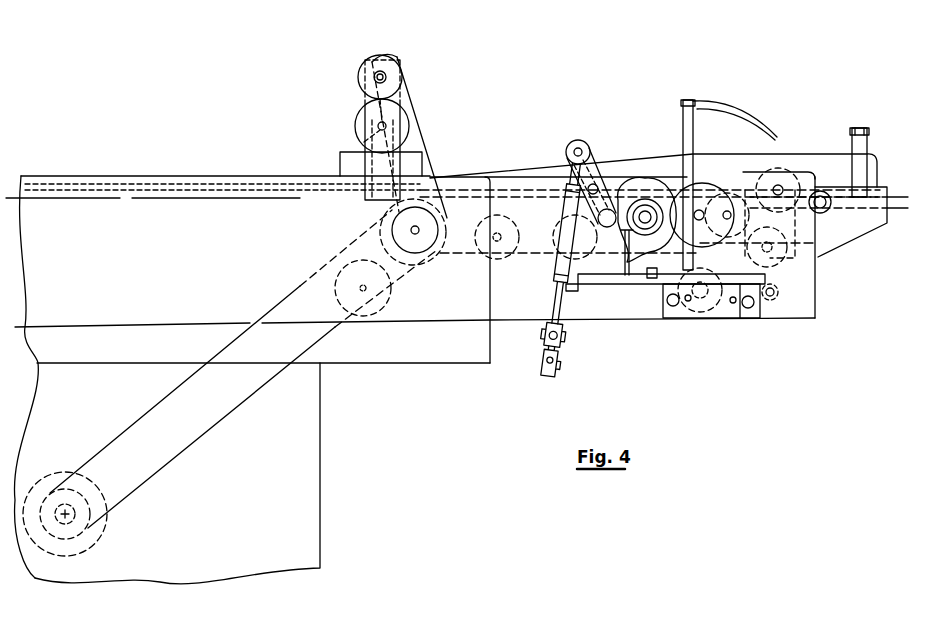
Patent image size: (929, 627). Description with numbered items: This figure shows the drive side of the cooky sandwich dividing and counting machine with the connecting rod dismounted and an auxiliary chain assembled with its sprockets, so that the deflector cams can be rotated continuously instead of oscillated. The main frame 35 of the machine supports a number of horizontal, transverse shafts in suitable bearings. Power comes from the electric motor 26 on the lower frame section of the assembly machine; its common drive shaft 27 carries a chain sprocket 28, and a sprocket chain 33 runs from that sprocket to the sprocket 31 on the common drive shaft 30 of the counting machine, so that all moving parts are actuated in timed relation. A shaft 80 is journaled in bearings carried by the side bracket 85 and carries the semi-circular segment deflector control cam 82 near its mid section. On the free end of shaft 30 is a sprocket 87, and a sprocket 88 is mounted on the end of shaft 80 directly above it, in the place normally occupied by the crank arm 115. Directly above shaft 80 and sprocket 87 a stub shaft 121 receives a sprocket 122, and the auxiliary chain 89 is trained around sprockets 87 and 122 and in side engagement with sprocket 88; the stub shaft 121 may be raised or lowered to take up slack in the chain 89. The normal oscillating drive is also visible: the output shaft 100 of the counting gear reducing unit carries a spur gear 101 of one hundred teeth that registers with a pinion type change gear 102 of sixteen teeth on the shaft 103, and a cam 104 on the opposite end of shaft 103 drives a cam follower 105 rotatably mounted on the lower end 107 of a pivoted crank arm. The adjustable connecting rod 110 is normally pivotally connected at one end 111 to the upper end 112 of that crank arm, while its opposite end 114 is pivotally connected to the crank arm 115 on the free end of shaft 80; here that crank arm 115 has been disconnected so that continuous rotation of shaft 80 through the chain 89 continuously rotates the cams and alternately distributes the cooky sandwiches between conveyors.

The electric motor 26 is at (68, 548).
The common drive shaft 27 is at (92, 491).
The chain sprocket 28 is at (106, 530).
The sprocket chain 33 is at (198, 445).
The common drive shaft 30 is at (411, 230).
The sprocket 31 is at (447, 257).
The sprocket 87 is at (428, 262).
The side bracket 85 is at (372, 162).
The auxiliary chain 89 is at (425, 136).
The stub shaft 121 is at (385, 76).
The sprocket 122 is at (366, 70).
The shaft 80 is at (386, 125).
The segment deflector control cam 82 is at (351, 121).
The sprocket 88 is at (362, 118).
The adjustable connecting rod 110 is at (553, 272).
The opposite end of rod 114 is at (558, 360).
The crank arm 115 is at (540, 368).
The upper end of crank arm 112 is at (601, 176).
The end of connecting rod 111 is at (574, 152).
The cam follower 105 is at (597, 220).
The lower end of crank arm 107 is at (612, 236).
The shaft 103 is at (645, 214).
The cam 104 is at (697, 190).
The output shaft 100 is at (703, 212).
The spur gear 101 is at (733, 262).
The pinion type change gear 102 is at (606, 280).
The main frame 35 is at (703, 320).